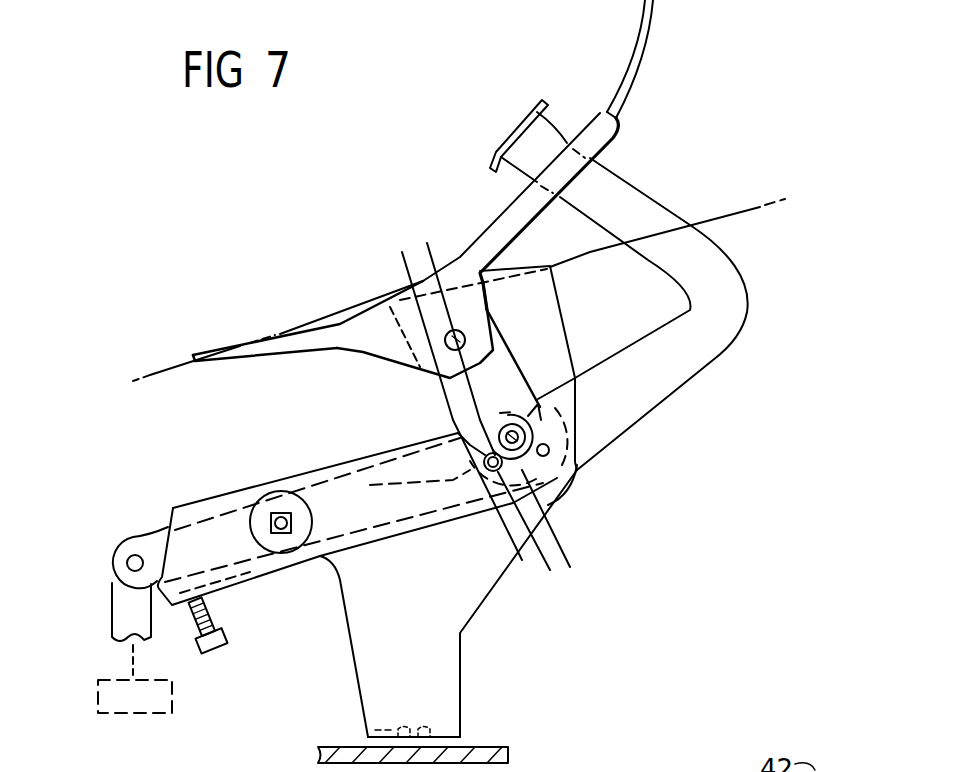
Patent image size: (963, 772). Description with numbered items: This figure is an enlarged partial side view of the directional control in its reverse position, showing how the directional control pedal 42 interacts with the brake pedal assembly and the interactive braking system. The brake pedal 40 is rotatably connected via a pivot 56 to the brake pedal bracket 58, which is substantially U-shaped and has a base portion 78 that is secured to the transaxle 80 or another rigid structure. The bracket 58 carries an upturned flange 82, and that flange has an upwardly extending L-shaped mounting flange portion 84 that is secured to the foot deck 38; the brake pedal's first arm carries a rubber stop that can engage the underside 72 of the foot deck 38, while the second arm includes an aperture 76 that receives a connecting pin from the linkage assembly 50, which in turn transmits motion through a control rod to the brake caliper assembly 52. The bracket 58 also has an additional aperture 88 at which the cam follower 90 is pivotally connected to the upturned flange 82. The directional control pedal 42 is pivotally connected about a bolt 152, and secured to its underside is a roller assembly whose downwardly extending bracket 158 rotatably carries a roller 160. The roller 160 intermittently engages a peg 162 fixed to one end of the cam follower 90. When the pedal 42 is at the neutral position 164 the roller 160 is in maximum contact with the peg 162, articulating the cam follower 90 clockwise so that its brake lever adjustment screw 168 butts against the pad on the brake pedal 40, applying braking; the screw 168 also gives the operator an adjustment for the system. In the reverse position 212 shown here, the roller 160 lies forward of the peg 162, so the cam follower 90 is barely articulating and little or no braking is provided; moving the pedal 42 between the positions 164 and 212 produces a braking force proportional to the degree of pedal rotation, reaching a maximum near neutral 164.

The foot deck 38 is at (167, 368).
The brake pedal 40 is at (629, 198).
The directional control pedal 42 is at (641, 33).
The linkage assembly 50 is at (95, 616).
The brake caliper assembly 52 is at (188, 689).
The pivot 56 is at (552, 445).
The brake pedal bracket 58 is at (424, 628).
The underside of the foot deck 72 is at (786, 205).
The aperture 76 is at (121, 541).
The base portion 78 is at (435, 733).
The transaxle 80 is at (487, 747).
The upturned flange 82 is at (468, 593).
The L-shaped mounting flange portion 84 is at (549, 311).
The additional aperture 88 is at (273, 513).
The cam follower 90 is at (193, 508).
The bolt 152 is at (447, 373).
The downwardly extending bracket 158 is at (447, 391).
The roller 160 is at (535, 458).
The peg 162 is at (527, 470).
The neutral position 164 is at (418, 279).
The brake lever adjustment screw 168 is at (226, 646).
The reverse position 212 is at (427, 243).